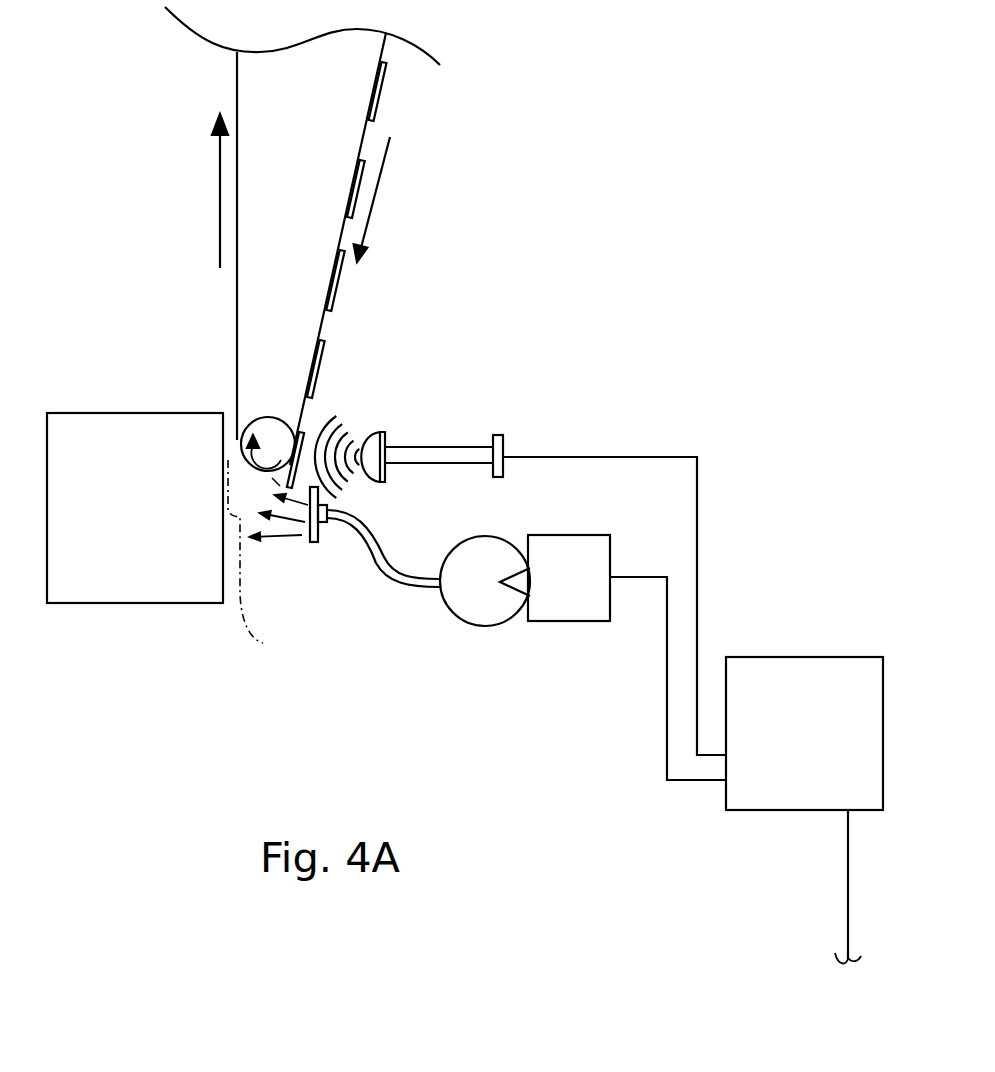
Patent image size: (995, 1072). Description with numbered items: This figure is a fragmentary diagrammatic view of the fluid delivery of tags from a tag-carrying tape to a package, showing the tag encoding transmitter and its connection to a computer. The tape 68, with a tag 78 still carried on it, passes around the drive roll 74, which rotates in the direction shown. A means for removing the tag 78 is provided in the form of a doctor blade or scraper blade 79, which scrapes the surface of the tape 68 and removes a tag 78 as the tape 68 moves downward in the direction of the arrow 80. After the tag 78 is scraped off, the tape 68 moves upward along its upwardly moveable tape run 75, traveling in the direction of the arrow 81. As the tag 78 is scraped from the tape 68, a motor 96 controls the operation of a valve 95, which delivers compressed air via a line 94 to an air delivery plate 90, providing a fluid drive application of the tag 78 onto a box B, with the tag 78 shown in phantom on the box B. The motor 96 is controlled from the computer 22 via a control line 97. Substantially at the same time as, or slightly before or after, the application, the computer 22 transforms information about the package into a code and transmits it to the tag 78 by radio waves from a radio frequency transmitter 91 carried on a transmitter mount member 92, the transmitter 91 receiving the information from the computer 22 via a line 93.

The computer 22 is at (782, 684).
The tape 68 is at (325, 318).
The drive roll 74 is at (275, 436).
The upwardly moveable tape run 75 is at (237, 320).
The tag 78 is at (382, 97).
The doctor blade 79 is at (277, 484).
The arrow 80 is at (376, 205).
The arrow 81 is at (220, 200).
The air delivery plate 90 is at (320, 541).
The radio frequency transmitter 91 is at (381, 466).
The transmitter mount member 92 is at (463, 455).
The line 93 is at (697, 557).
The line 94 is at (383, 563).
The valve 95 is at (493, 600).
The motor 96 is at (583, 536).
The control line 97 is at (665, 743).
The box B is at (110, 432).